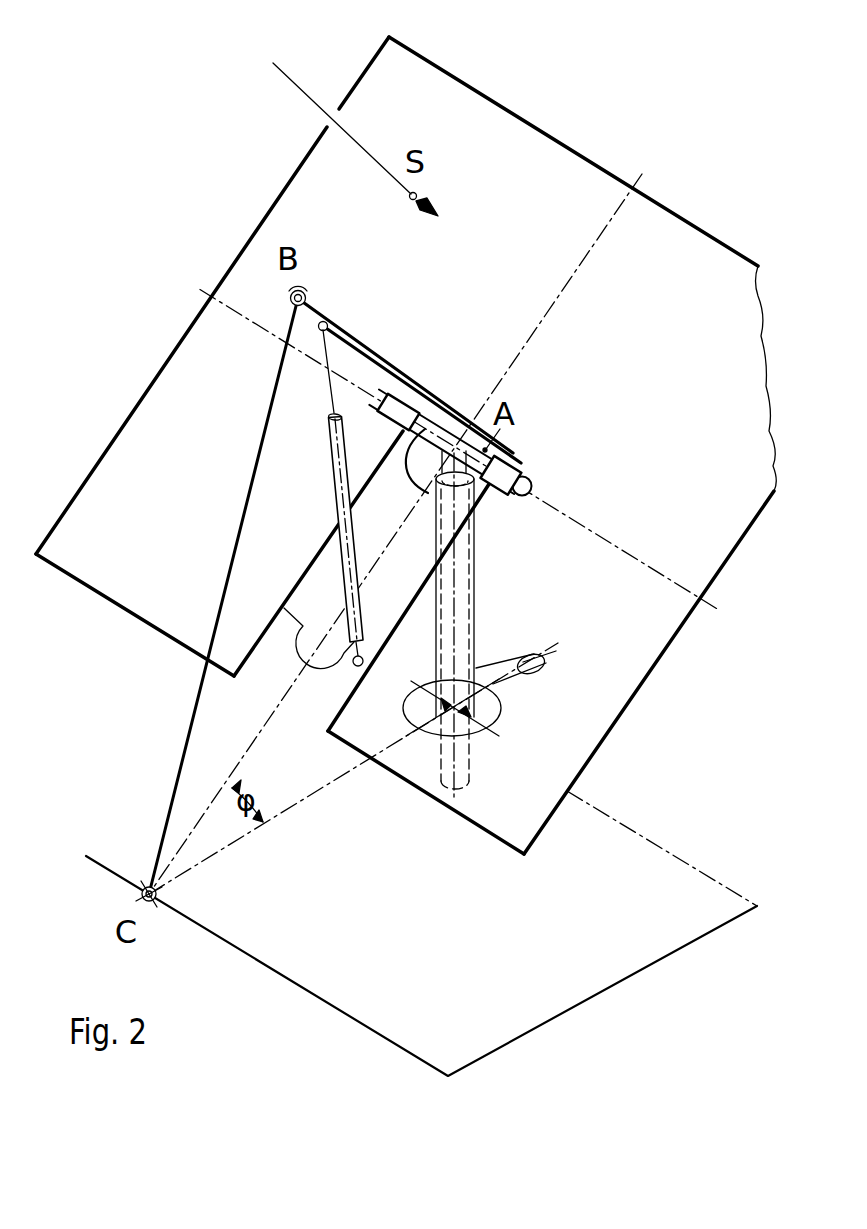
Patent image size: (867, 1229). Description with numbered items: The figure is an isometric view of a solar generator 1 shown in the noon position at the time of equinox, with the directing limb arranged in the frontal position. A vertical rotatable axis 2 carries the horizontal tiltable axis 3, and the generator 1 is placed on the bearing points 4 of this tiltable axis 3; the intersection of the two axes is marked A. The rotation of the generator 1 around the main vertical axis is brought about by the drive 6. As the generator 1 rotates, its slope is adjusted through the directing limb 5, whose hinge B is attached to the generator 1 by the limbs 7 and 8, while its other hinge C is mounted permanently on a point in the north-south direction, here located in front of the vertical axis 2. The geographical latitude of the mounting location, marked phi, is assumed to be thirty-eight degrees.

The generator 1 is at (702, 560).
The vertical rotatable axis 2 is at (468, 612).
The horizontal tiltable axis 3 is at (484, 449).
The bearing points 4 is at (402, 430).
The directing limb 5 is at (253, 470).
The drive 6 is at (492, 700).
The limb 7 is at (366, 373).
The limb 8 is at (325, 438).